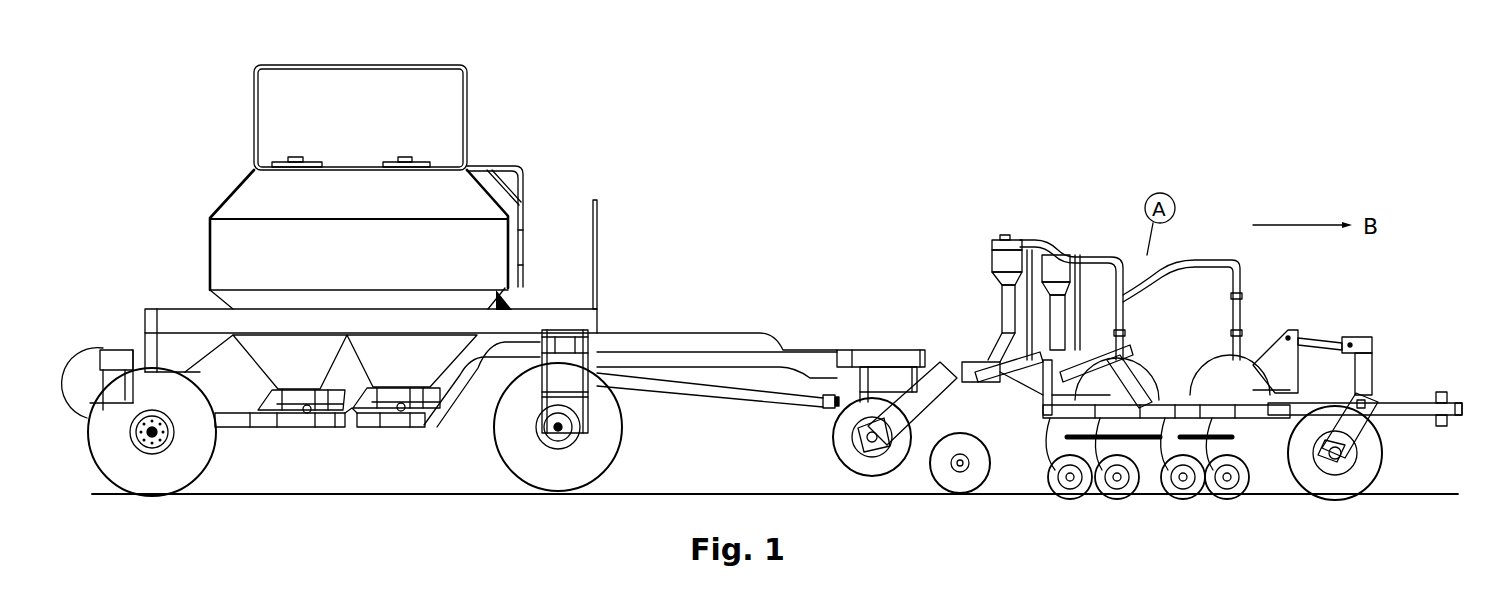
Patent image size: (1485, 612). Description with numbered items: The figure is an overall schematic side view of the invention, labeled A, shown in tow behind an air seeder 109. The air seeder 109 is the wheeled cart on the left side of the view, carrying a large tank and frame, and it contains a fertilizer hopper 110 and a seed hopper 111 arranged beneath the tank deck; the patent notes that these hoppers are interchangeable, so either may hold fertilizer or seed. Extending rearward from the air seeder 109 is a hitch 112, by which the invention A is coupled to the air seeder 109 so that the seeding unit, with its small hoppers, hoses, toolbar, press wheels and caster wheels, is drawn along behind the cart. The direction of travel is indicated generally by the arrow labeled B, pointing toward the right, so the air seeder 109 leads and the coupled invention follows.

The air seeder 109 is at (532, 153).
The fertilizer hopper 110 is at (413, 372).
The seed hopper 111 is at (300, 375).
The hitch 112 is at (823, 404).